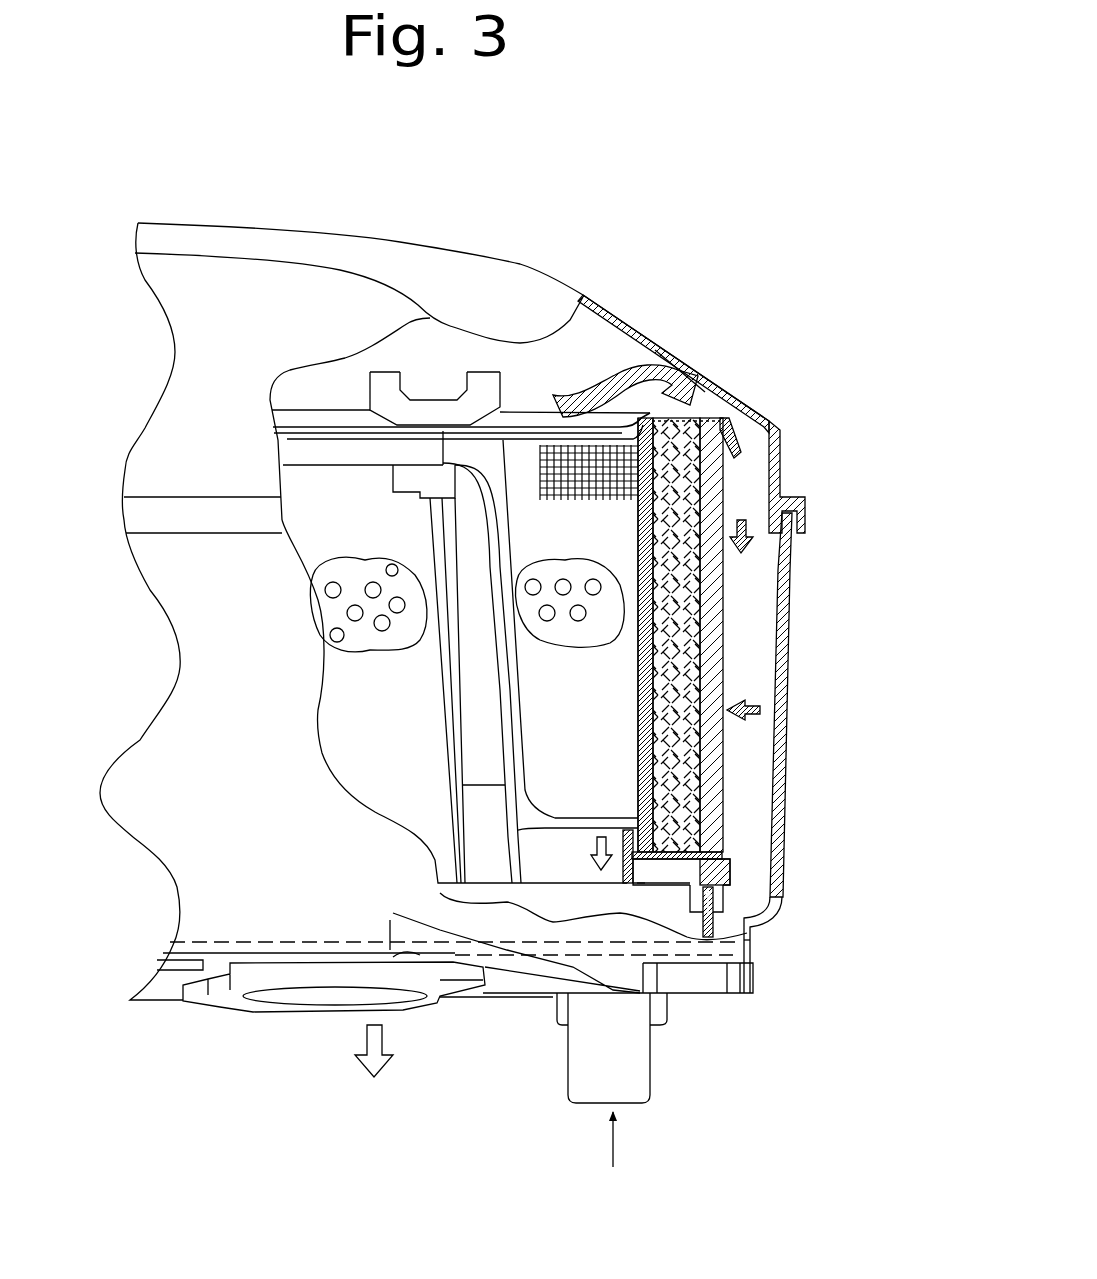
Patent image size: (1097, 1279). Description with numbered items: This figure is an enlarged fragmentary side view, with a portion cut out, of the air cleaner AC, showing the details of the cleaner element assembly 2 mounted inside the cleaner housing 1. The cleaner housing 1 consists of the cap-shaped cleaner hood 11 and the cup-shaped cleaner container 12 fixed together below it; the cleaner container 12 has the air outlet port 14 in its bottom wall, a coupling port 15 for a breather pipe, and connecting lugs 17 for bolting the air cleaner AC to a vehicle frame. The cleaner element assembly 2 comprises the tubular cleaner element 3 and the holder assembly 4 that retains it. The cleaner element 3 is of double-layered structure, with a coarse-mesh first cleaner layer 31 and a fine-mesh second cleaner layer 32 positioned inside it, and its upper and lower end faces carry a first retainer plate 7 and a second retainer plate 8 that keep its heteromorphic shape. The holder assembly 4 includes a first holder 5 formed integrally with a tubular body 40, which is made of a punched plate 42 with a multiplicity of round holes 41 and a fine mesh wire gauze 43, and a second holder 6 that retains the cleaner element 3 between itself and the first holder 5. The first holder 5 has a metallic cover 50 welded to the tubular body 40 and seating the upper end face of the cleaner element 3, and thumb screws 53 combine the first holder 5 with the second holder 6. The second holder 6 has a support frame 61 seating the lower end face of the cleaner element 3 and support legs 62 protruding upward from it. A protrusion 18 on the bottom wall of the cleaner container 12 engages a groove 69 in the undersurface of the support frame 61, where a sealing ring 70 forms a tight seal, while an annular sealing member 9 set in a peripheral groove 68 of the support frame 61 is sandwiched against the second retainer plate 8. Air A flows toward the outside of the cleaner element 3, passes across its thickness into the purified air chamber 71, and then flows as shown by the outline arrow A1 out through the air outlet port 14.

The cleaner housing 1 is at (521, 259).
The cleaner element assembly 2 is at (547, 367).
The cleaner element 3 is at (789, 635).
The holder assembly 4 is at (440, 793).
The first holder 5 is at (672, 358).
The second holder 6 is at (731, 888).
The first retainer plate 7 is at (735, 405).
The second retainer plate 8 is at (733, 860).
The sealing member 9 is at (640, 880).
The cleaner hood 11 is at (762, 418).
The cleaner container 12 is at (787, 707).
The air outlet port 14 is at (333, 997).
The coupling port 15 is at (580, 1067).
The connecting lugs 17 is at (753, 977).
The protrusion 18 is at (753, 950).
The first cleaner layer 31 is at (717, 572).
The second cleaner layer 32 is at (690, 623).
The tubular body 40 is at (590, 690).
The round holes 41 is at (593, 577).
The punched plate 42 is at (638, 681).
The fine mesh wire gauze 43 is at (638, 787).
The cover 50 is at (727, 418).
The thumb screw 53 is at (388, 383).
The support frame 61 is at (730, 878).
The support legs 62 is at (480, 737).
The peripheral groove 68 is at (667, 883).
The groove 69 is at (742, 923).
The sealing ring 70 is at (715, 917).
The purified air chamber 71 is at (388, 712).
The air A is at (610, 390).
The outline arrow A1 is at (385, 1040).
The air cleaner AC is at (233, 222).